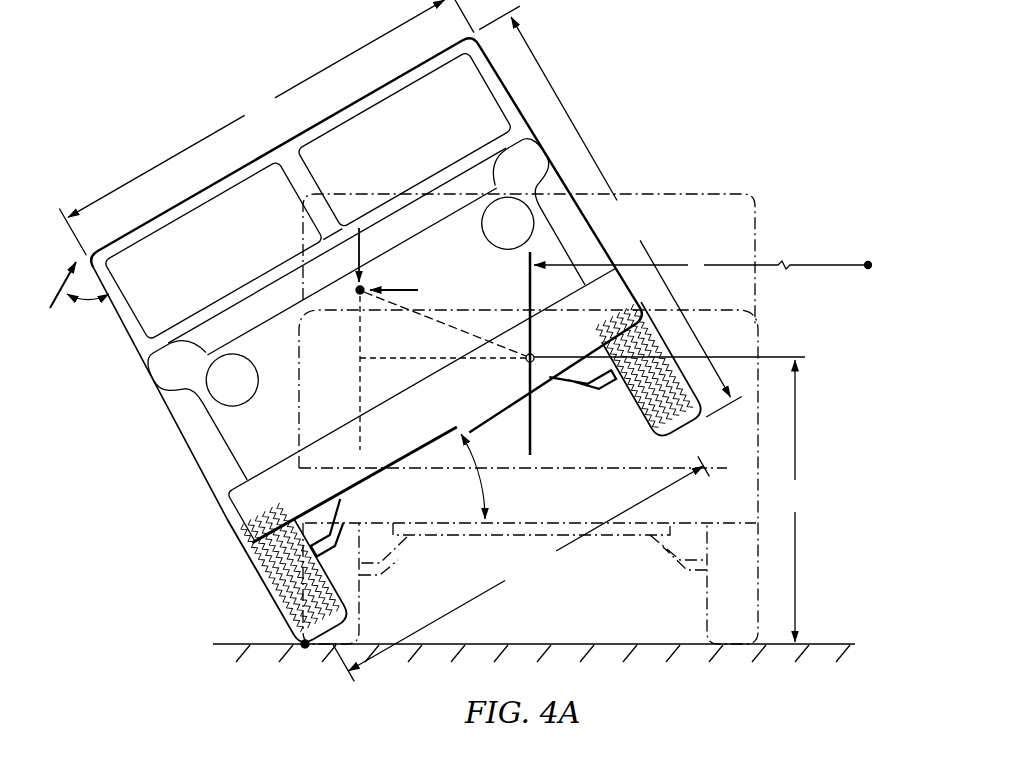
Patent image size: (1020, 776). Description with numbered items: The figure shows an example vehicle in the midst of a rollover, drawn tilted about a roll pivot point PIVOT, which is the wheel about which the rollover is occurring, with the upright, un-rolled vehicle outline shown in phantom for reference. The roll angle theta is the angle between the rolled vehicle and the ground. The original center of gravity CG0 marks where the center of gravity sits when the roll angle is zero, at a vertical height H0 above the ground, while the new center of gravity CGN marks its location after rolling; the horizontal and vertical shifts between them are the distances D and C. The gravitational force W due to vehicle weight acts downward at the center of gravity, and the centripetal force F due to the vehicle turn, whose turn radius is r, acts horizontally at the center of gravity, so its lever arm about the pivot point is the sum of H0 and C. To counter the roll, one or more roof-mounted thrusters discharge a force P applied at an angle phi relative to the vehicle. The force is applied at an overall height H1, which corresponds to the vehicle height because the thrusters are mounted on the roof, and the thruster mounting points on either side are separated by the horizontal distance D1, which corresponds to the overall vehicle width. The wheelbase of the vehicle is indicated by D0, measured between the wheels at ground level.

The horizontal distance between thruster mounting points D1 is at (266, 128).
The overall height at which force P is applied H1 is at (611, 212).
The wheelbase of the vehicle D0 is at (520, 559).
The vertical height of the vehicle center of gravity H0 is at (669, 499).
The vehicle turn radius r is at (703, 265).
The vehicle center of gravity accounting for roll CGN is at (420, 366).
The vehicle original center of gravity CG0 is at (549, 353).
The gravitational force due to vehicle weight W is at (359, 245).
The centripetal force F is at (403, 292).
The vertical movement of the vehicle center of gravity C is at (347, 329).
The horizontal movement of the vehicle center of gravity D is at (443, 372).
The vehicle roll angle theta is at (473, 476).
The vehicle thruster force P is at (56, 298).
The thruster force application angle phi is at (88, 315).
The roll pivot point PIVOT is at (305, 647).